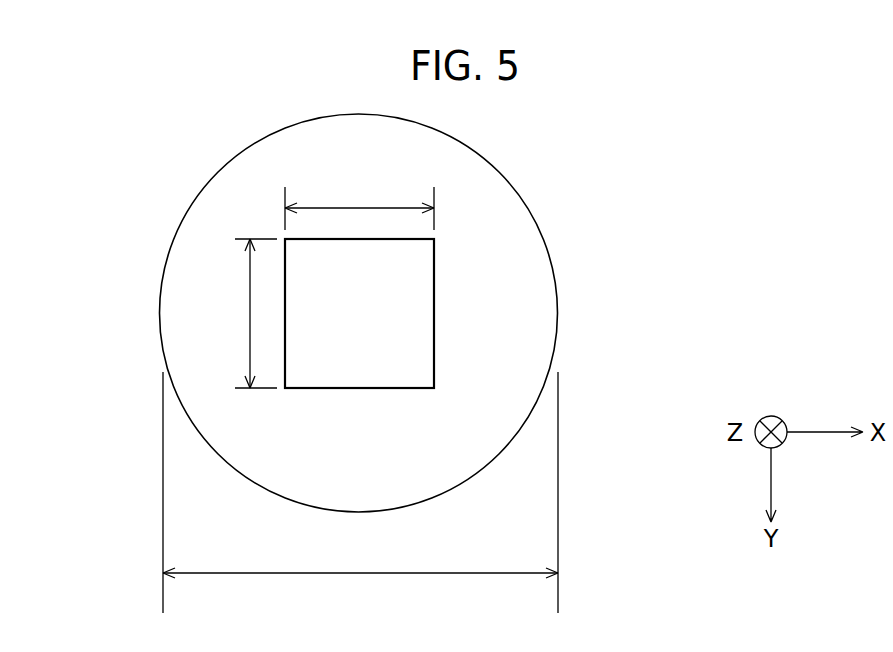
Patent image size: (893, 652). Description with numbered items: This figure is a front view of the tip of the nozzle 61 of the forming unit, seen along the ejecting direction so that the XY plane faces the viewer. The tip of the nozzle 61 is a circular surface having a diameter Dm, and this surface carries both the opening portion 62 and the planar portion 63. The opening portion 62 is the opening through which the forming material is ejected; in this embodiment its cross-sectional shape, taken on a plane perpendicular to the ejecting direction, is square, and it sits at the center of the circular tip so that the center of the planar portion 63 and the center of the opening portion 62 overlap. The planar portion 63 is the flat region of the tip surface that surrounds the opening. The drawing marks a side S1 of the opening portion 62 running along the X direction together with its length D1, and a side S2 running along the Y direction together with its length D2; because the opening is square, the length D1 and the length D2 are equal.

The nozzle 61 is at (602, 218).
The opening portion 62 is at (434, 323).
The planar portion 63 is at (543, 343).
The side of the opening portion along the X direction S1 is at (365, 388).
The side of the opening portion along the Y direction S2 is at (285, 337).
The length of the side S1 D1 is at (359, 202).
The length of the side S2 D2 is at (242, 313).
The diameter of the tip surface of the nozzle Dm is at (360, 493).